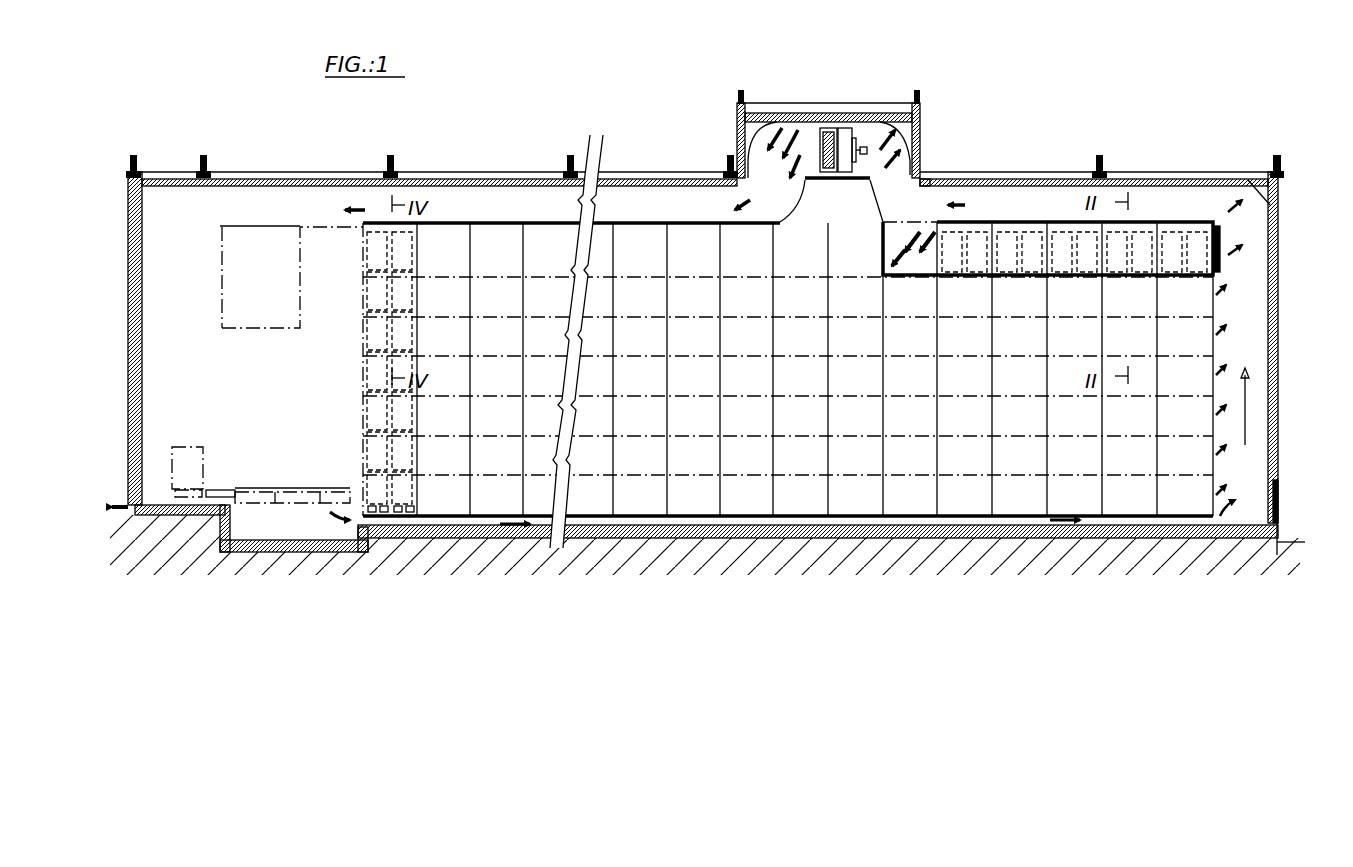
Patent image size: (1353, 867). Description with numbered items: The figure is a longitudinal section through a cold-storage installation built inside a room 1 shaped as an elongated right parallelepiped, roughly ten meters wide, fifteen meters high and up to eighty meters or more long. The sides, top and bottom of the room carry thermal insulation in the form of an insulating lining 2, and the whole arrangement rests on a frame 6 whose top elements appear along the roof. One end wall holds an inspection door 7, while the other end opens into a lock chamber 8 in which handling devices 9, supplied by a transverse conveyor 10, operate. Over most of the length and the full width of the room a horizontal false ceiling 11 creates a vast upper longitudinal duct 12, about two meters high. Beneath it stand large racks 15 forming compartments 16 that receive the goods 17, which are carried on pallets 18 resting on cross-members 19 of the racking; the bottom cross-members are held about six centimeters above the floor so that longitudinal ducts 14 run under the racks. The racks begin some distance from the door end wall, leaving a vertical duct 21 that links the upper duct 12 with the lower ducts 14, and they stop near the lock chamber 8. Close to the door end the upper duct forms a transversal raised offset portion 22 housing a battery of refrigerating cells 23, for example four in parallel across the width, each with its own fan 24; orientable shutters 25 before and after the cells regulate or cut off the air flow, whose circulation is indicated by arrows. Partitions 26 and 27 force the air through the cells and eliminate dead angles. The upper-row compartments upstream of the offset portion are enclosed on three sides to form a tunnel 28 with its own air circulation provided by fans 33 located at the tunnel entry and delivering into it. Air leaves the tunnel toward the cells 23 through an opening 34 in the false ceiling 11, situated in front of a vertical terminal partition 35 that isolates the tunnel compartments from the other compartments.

The room 1 is at (1272, 326).
The insulating lining 2 is at (1278, 445).
The frame 6 is at (209, 163).
The inspection door 7 is at (1280, 500).
The lock chamber 8 is at (280, 396).
The handling devices 9 is at (248, 490).
The transverse conveyor 10 is at (240, 306).
The false ceiling 11 is at (490, 222).
The upper longitudinal duct 12 is at (656, 217).
The longitudinal ducts 14 is at (695, 530).
The racks 15 is at (483, 398).
The compartments 16 is at (508, 393).
The goods 17 is at (405, 487).
The pallets 18 is at (418, 511).
The cross-members 19 is at (640, 530).
The vertical duct 21 is at (1258, 483).
The offset portion 22 is at (797, 135).
The refrigerating cells 23 is at (830, 130).
The fan 24 is at (855, 140).
The orientable shutters 25 is at (900, 155).
The partition 26 is at (872, 193).
The partition 27 is at (748, 130).
The tunnel 28 is at (1175, 240).
The fans 33 is at (1220, 265).
The opening 34 is at (893, 224).
The vertical terminal partition 35 is at (883, 252).